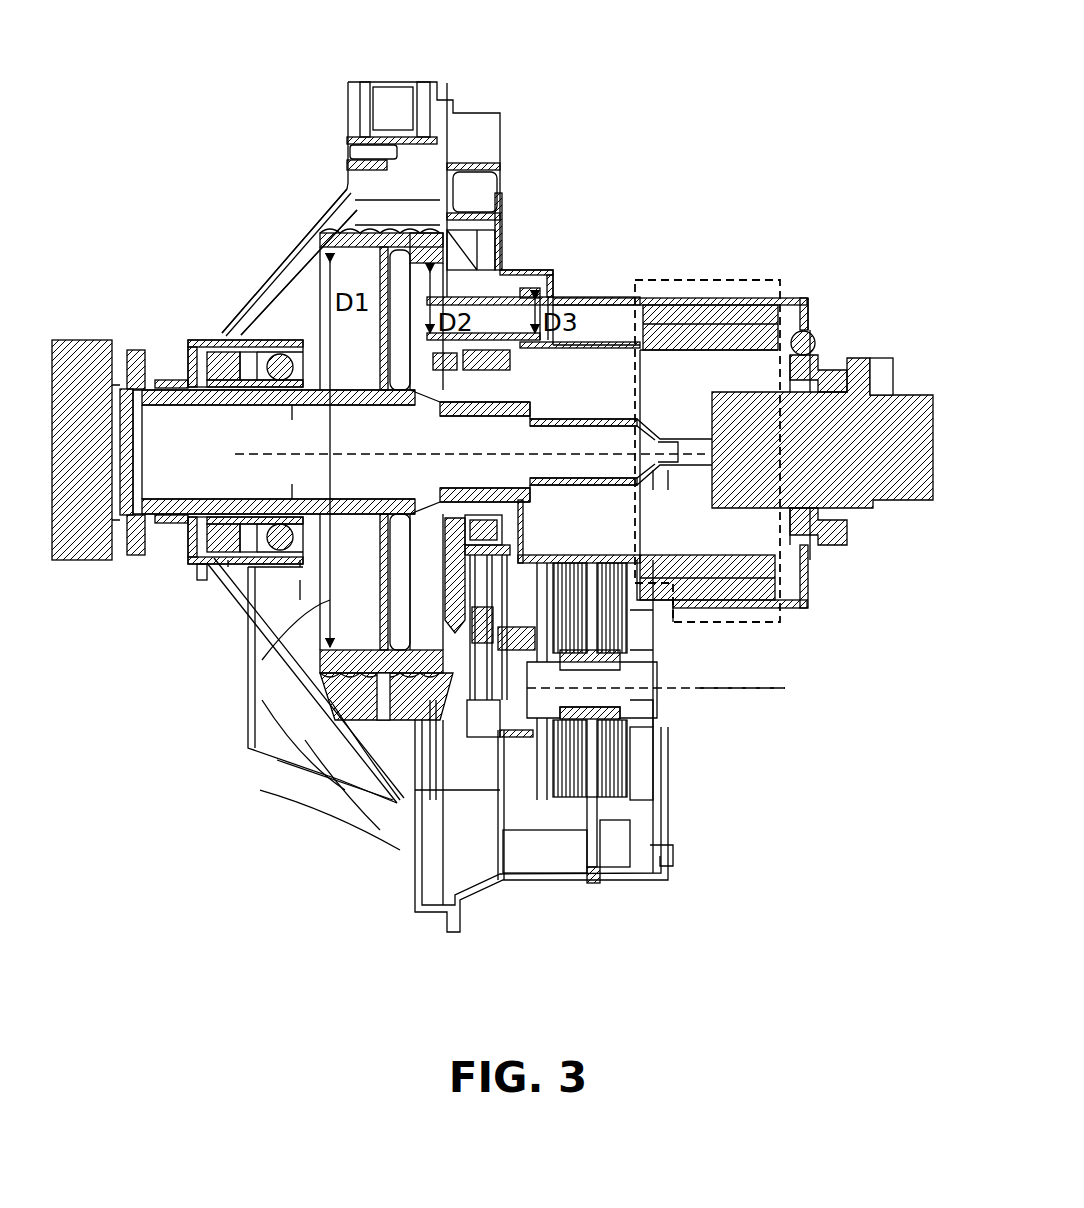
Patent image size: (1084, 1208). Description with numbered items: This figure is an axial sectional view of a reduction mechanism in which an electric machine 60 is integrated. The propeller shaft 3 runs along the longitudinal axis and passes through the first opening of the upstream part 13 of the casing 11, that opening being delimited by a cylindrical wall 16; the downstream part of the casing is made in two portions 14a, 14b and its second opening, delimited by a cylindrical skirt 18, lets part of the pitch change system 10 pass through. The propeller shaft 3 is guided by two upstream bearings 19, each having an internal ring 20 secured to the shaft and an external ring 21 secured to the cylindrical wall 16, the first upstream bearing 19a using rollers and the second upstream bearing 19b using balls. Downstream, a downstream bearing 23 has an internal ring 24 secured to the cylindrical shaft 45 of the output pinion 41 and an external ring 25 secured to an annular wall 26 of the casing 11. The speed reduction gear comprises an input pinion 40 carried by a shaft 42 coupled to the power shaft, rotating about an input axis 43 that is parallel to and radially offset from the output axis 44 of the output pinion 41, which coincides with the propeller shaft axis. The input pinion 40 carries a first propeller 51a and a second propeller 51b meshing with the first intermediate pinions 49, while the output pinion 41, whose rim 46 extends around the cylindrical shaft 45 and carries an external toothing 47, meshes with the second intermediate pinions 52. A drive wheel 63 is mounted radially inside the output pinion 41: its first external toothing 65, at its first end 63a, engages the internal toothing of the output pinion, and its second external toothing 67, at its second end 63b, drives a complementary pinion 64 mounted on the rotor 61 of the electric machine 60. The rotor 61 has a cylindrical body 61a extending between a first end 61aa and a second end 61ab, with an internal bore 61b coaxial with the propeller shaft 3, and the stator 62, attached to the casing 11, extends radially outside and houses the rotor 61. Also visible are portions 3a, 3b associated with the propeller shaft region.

The propeller shaft 3 is at (127, 343).
The mounting flange 3a is at (137, 553).
The housing portion 3b is at (660, 470).
The pitch change system 10 is at (905, 395).
The casing 11 is at (818, 335).
The upstream part 13 is at (268, 660).
The first portion of the downstream part 14a is at (455, 215).
The second portion of the downstream part 14b is at (690, 298).
The cylindrical wall 16 is at (290, 337).
The cylindrical skirt 18 is at (837, 530).
The upstream bearings 19 is at (147, 350).
The first upstream bearing 19a is at (200, 568).
The second upstream bearing 19b is at (228, 567).
The internal ring 20 is at (290, 400).
The external ring 21 is at (228, 338).
The downstream bearing 23 is at (381, 453).
The internal ring 24 is at (485, 620).
The external ring 25 is at (395, 700).
The annular wall 26 is at (497, 690).
The input pinion 40 is at (630, 700).
The output pinion 41 is at (305, 655).
The shaft 42 is at (637, 700).
The input axis 43 is at (783, 690).
The output axis 44 is at (548, 449).
The cylindrical shaft 45 is at (327, 335).
The rim 46 is at (352, 420).
The external toothing 47 is at (368, 192).
The first intermediate pinions 49 is at (630, 733).
The first propeller 51a is at (555, 775).
The second propeller 51b is at (600, 800).
The second intermediate pinions 52 is at (340, 700).
The electric machine 60 is at (780, 300).
The rotor 61 is at (770, 583).
The cylindrical body 61a is at (710, 305).
The internal bore 61b is at (773, 593).
The first end 61aa is at (533, 350).
The second end 61ab is at (767, 355).
The stator 62 is at (805, 300).
The drive wheel 63 is at (470, 300).
The first end 63a is at (385, 395).
The second end 63b is at (560, 296).
The complementary pinion 64 is at (445, 700).
The first external toothing 65 is at (480, 265).
The second external toothing 67 is at (540, 292).